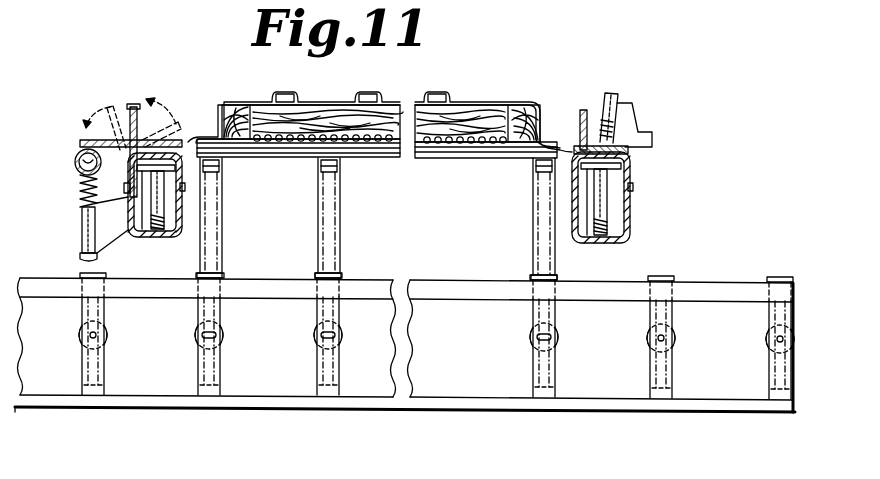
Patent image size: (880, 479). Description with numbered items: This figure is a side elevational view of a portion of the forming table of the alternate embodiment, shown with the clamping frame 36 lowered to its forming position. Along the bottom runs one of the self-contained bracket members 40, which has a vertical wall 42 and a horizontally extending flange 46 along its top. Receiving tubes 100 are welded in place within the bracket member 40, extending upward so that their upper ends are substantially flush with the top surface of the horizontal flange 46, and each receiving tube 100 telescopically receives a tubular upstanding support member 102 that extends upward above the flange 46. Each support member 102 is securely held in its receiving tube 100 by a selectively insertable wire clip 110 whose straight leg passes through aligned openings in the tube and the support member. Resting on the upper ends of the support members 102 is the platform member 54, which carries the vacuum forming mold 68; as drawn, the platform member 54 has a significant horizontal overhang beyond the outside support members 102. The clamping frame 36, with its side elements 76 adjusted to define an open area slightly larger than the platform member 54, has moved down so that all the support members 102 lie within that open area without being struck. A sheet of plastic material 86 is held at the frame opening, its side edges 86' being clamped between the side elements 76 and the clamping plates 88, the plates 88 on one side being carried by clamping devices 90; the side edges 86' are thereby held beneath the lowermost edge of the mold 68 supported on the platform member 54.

The clamping frame 36 is at (74, 146).
The bracket member 40 is at (625, 420).
The vertical wall 42 is at (740, 391).
The horizontally extending flange 46 is at (740, 283).
The platform member 54 is at (375, 157).
The vacuum forming mold 68 is at (300, 130).
The side element 76 is at (170, 237).
The plastic material sheet 86 is at (376, 112).
The side edge of plastic sheet 86' is at (551, 173).
The clamping plate 88 is at (133, 107).
The clamping device 90 is at (620, 114).
The receiving tube 100 is at (106, 314).
The upstanding support member 102 is at (222, 240).
The wire clip 110 is at (197, 334).